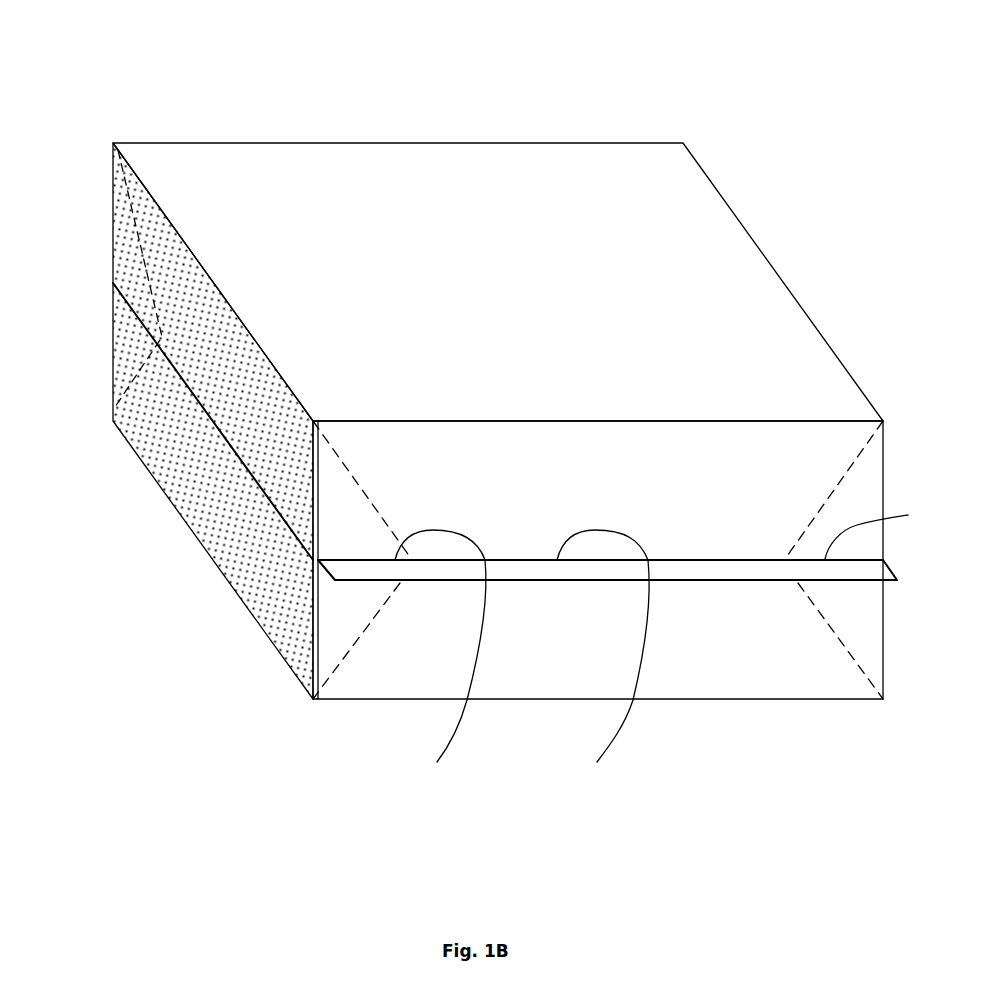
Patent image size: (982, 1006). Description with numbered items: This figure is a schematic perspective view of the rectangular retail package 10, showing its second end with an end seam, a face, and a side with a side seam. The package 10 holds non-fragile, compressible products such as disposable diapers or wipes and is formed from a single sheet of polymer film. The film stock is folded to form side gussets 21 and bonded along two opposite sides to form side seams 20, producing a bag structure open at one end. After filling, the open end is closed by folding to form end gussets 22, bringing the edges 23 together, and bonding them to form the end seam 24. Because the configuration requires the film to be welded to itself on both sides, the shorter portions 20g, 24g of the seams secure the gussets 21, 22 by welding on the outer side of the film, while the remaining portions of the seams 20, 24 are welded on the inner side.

The retail package 10 is at (488, 407).
The side seam 20 is at (236, 452).
The shorter portion of side seam 20g is at (127, 296).
The side gusset 21 is at (113, 344).
The end gusset 22 is at (363, 630).
The edge 23 is at (850, 568).
The end seam 24 is at (603, 658).
The shorter portion of end seam 24g is at (670, 647).